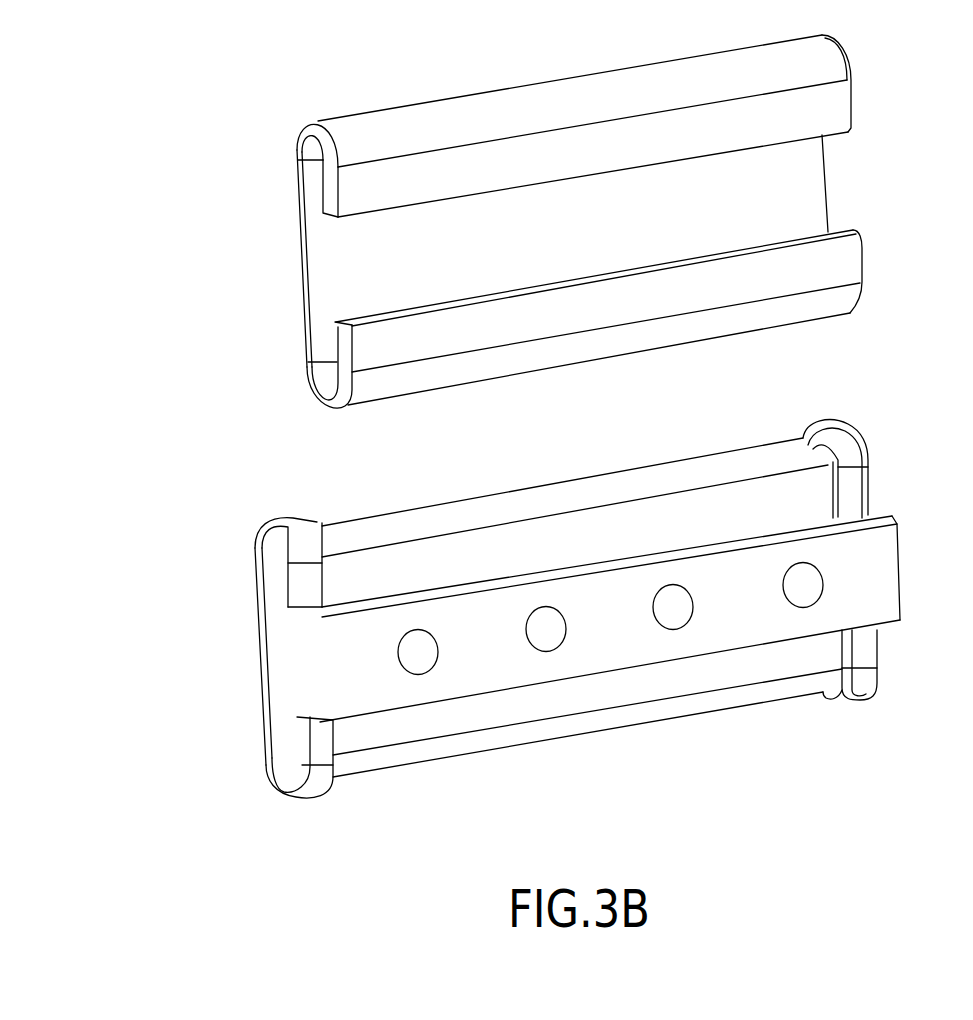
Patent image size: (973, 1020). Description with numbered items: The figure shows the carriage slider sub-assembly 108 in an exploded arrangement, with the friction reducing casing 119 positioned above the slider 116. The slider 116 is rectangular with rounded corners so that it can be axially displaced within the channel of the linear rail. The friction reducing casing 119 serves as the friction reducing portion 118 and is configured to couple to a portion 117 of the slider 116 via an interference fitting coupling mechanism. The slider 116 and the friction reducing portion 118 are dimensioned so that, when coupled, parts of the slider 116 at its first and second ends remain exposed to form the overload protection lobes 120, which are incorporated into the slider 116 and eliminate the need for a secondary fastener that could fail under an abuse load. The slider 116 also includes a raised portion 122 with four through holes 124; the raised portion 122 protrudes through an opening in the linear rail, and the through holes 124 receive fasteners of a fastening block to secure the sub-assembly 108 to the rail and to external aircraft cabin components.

The carriage slider sub-assembly 108 is at (104, 161).
The slider 116 is at (876, 392).
The portion of the slider 117 is at (688, 490).
The friction reducing portion 118 is at (290, 111).
The friction reducing casing 119 is at (562, 95).
The overload protection lobes 120 is at (295, 528).
The raised portion 122 is at (367, 693).
The through holes 124 is at (803, 598).